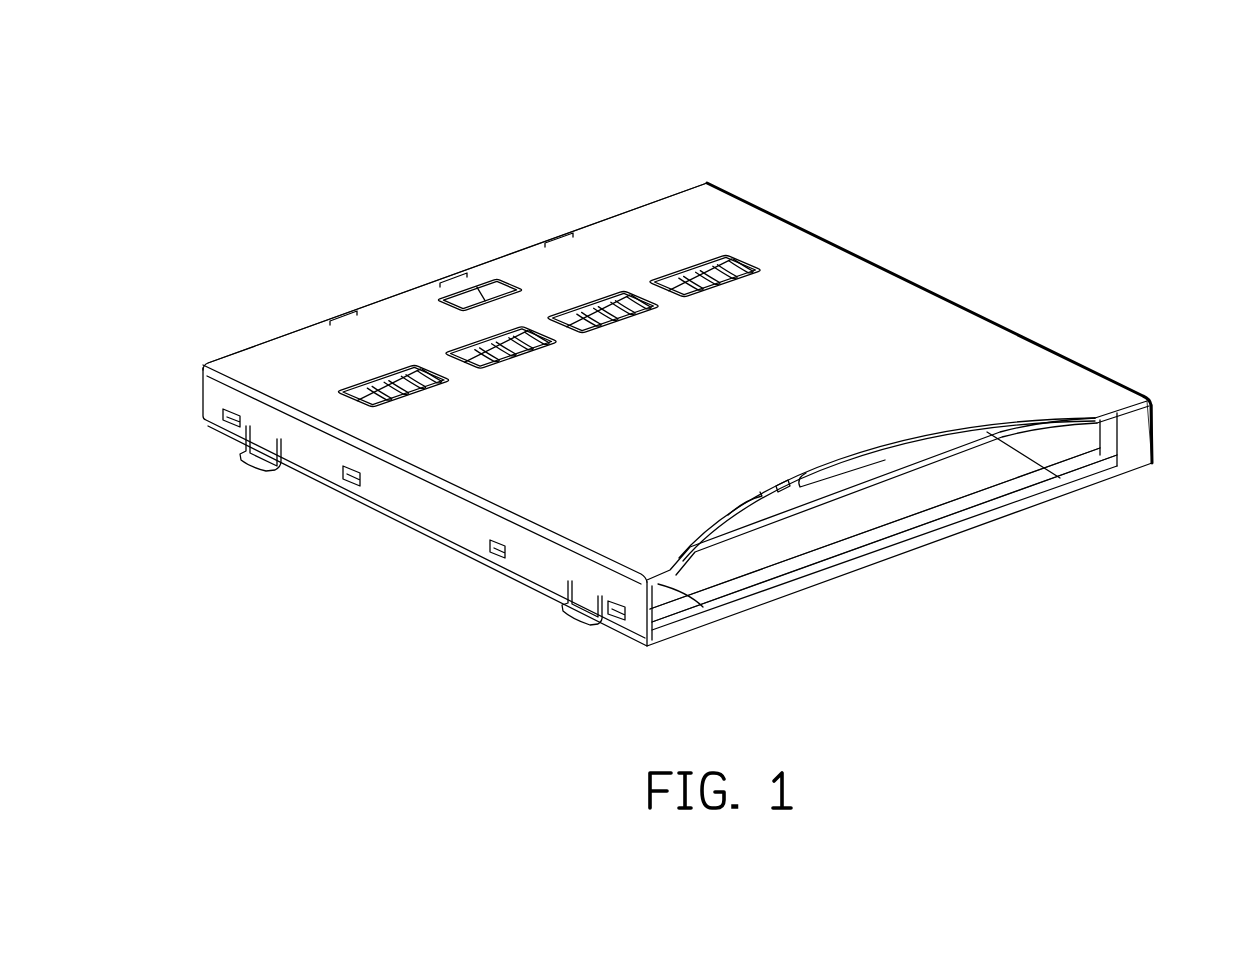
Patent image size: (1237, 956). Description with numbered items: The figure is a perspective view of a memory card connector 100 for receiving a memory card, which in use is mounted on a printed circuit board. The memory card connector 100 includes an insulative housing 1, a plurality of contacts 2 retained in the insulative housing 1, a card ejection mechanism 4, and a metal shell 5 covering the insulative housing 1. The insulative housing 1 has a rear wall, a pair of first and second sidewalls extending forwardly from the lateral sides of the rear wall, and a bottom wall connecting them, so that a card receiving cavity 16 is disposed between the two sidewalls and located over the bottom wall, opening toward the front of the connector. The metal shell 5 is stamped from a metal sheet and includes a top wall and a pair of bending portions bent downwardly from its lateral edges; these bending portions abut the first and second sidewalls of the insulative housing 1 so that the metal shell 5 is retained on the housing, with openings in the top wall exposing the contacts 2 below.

The memory card connector 100 is at (712, 81).
The insulative housing 1 is at (1135, 447).
The contacts 2 is at (408, 388).
The card ejection mechanism 4 is at (770, 502).
The metal shell 5 is at (812, 295).
The card receiving cavity 16 is at (903, 498).